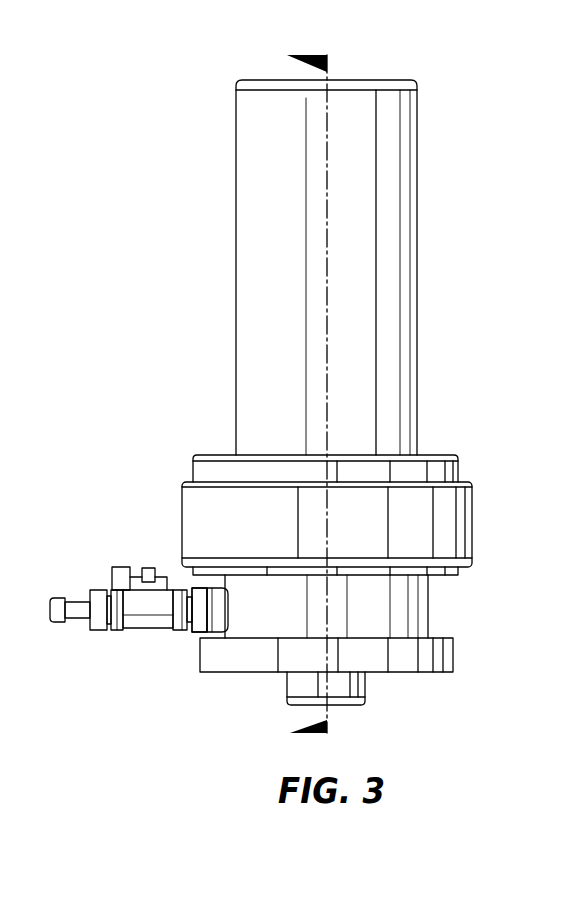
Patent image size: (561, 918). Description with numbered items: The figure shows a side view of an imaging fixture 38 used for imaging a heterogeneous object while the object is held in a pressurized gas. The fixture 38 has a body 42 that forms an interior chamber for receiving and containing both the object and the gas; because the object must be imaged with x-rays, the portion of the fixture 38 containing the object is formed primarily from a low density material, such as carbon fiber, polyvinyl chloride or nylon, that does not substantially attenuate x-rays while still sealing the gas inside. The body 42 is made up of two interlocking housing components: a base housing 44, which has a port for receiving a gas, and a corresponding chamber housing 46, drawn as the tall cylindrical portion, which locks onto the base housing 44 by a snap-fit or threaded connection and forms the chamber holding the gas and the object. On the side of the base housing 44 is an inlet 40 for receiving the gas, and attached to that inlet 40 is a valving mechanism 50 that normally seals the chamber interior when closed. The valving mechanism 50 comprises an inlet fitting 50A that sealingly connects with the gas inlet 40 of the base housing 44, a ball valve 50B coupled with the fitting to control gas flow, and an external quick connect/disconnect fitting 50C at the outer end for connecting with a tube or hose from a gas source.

The fixture 38 is at (156, 162).
The body 42 is at (199, 316).
The chamber housing 46 is at (418, 158).
The base housing 44 is at (472, 511).
The inlet 40 is at (230, 611).
The valving mechanism 50 is at (195, 690).
The inlet fitting 50A is at (188, 634).
The ball valve 50B is at (132, 632).
The quick connect/disconnect fitting 50C is at (53, 598).